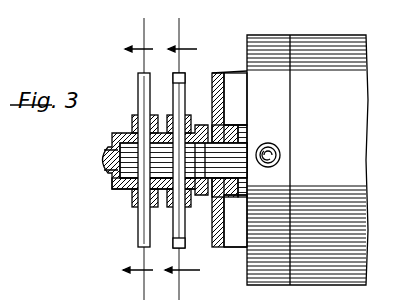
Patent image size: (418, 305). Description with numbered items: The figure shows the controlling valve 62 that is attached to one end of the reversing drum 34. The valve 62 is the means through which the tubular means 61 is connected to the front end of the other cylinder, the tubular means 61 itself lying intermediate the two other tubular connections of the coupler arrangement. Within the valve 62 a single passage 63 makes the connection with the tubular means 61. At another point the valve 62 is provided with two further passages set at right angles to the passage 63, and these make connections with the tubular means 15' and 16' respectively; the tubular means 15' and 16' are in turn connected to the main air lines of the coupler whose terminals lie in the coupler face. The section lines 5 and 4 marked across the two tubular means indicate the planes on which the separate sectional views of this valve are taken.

The reversing drum 34 is at (353, 137).
The tubular means 61 is at (137, 105).
The valve 62 is at (120, 185).
The passage 63 is at (107, 170).
The tubular means 15' is at (192, 149).
The tubular means 16' is at (196, 252).
The section line 5— 5 is at (138, 159).
The section line 4— 4 is at (182, 159).